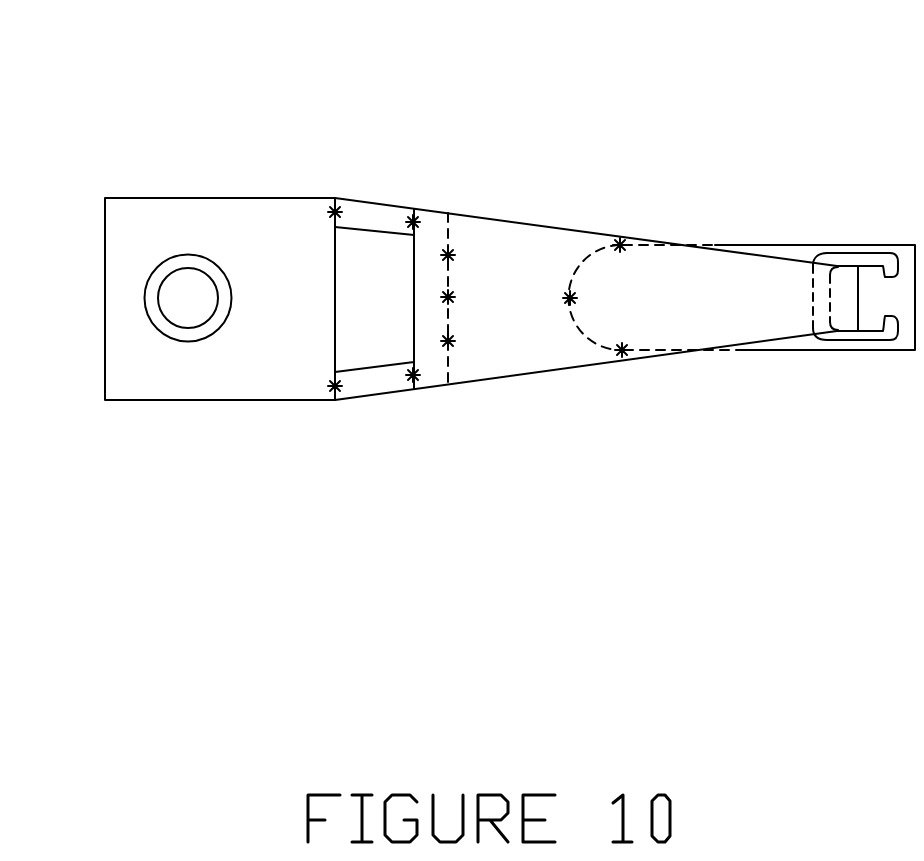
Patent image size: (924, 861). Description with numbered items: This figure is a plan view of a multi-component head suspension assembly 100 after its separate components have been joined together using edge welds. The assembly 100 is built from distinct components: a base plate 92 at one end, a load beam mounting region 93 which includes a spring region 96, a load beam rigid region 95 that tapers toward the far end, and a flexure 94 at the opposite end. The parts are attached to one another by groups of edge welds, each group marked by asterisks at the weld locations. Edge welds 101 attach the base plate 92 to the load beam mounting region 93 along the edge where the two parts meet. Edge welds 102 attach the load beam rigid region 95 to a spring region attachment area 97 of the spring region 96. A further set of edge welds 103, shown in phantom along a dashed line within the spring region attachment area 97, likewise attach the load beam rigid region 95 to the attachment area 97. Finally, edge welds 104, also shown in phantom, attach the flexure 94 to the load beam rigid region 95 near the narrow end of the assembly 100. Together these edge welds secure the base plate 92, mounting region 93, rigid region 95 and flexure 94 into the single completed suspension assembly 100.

The multi-component suspension assembly 100 is at (532, 113).
The base plate 92 is at (132, 212).
The load beam mounting region 93 is at (273, 186).
The flexure 94 is at (737, 245).
The load beam rigid region 95 is at (540, 364).
The spring region 96 is at (382, 201).
The spring region attachment area 97 is at (421, 198).
The edge welds 101 is at (333, 214).
The edge welds 102 is at (412, 224).
The edge welds 103 is at (450, 257).
The edge welds 104 is at (622, 247).